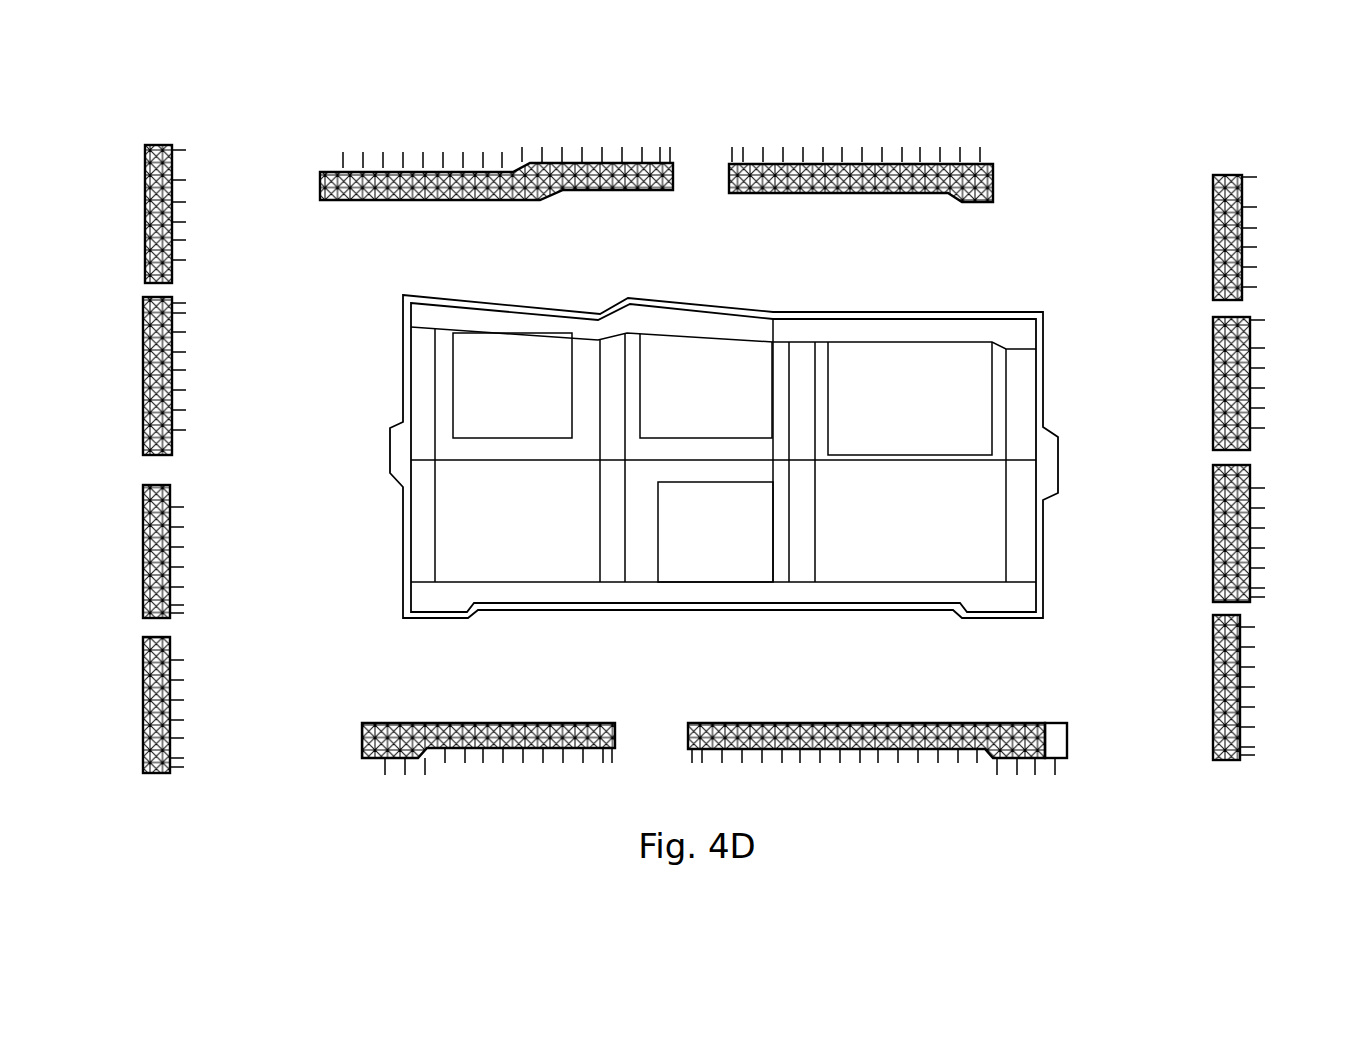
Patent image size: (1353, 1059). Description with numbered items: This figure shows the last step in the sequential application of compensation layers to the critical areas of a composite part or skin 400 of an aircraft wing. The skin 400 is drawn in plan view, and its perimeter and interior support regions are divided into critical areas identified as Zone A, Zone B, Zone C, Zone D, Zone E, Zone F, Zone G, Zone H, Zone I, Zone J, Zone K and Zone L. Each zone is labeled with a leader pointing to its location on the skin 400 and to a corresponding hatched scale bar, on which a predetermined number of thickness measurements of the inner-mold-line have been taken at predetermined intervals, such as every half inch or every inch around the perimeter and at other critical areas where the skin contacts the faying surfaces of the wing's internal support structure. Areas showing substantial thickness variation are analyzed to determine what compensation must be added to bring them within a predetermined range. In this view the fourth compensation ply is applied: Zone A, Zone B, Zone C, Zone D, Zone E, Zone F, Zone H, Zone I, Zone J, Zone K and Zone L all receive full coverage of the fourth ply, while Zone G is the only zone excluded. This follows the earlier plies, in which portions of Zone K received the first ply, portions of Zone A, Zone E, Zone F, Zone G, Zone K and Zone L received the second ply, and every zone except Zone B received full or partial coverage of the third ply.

The part or skin 400 is at (890, 528).
The Zone A is at (490, 201).
The Zone B is at (596, 360).
The Zone C is at (229, 372).
The Zone D is at (229, 552).
The Zone E is at (520, 723).
The Zone F is at (599, 509).
The Zone G is at (827, 723).
The Zone H is at (817, 539).
The Zone I is at (1211, 565).
The Zone J is at (1211, 363).
The Zone K is at (861, 196).
The Zone L is at (817, 365).